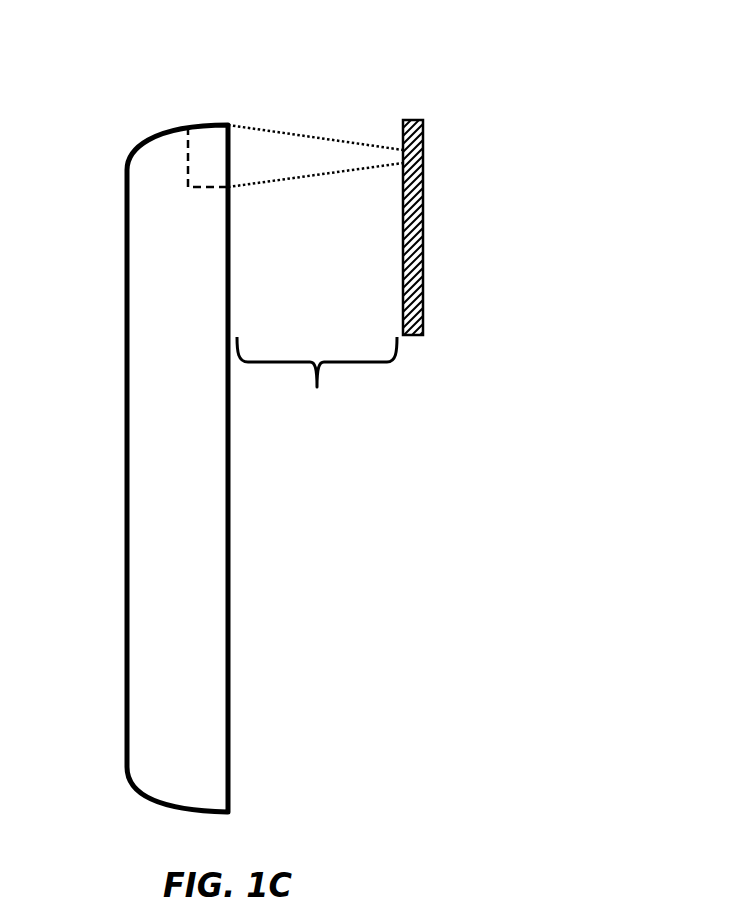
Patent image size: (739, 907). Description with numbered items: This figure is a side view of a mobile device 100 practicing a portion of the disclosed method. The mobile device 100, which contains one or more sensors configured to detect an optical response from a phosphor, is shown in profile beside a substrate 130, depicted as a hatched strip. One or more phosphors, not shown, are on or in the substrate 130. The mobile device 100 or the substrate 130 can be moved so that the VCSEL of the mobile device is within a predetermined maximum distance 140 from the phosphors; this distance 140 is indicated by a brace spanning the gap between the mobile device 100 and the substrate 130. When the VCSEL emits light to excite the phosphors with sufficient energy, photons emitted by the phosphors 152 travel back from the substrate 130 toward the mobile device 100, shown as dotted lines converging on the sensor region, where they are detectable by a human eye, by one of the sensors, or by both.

The mobile device 100 is at (127, 207).
The substrate 130 is at (412, 120).
The photons emitted by the phosphor(s) 152 is at (325, 177).
The predetermined maximum distance 140 is at (317, 391).